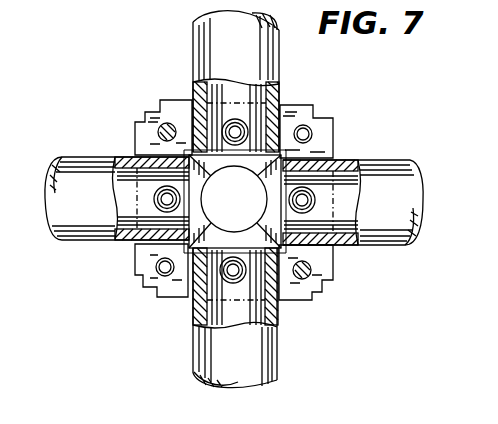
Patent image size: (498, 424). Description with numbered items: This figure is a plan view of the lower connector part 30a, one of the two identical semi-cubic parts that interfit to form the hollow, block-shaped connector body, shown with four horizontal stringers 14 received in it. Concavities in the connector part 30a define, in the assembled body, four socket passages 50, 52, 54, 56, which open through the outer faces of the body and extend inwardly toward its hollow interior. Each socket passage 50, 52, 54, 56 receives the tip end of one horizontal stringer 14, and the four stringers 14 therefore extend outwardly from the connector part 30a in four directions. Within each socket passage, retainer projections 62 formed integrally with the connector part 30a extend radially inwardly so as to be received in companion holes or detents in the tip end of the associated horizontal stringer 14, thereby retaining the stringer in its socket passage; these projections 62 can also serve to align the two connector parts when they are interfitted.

The horizontal stringer 14 is at (194, 36).
The connector part 30a is at (314, 114).
The socket passage 50 is at (280, 290).
The socket passage 52 is at (322, 152).
The socket passage 54 is at (192, 106).
The socket passage 56 is at (143, 245).
The projection 62 is at (248, 125).